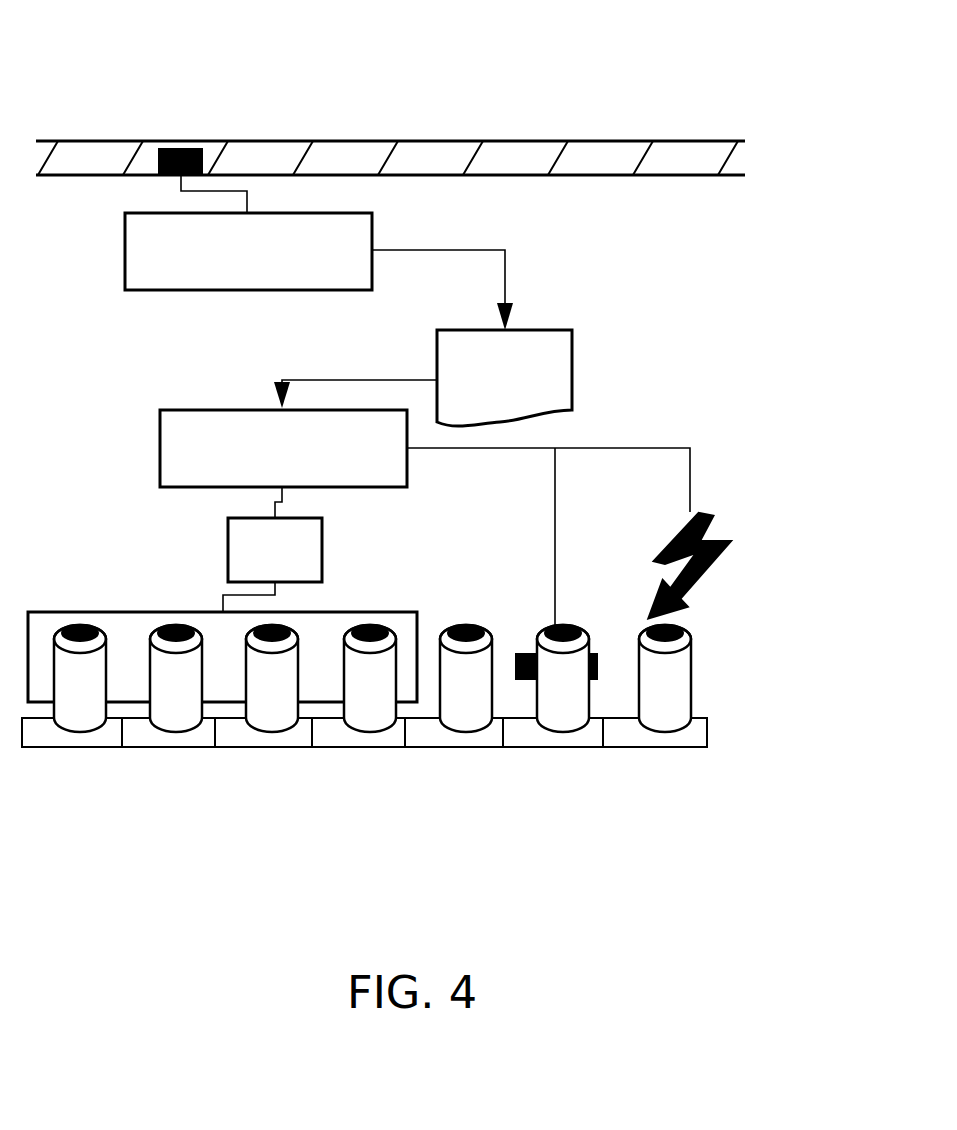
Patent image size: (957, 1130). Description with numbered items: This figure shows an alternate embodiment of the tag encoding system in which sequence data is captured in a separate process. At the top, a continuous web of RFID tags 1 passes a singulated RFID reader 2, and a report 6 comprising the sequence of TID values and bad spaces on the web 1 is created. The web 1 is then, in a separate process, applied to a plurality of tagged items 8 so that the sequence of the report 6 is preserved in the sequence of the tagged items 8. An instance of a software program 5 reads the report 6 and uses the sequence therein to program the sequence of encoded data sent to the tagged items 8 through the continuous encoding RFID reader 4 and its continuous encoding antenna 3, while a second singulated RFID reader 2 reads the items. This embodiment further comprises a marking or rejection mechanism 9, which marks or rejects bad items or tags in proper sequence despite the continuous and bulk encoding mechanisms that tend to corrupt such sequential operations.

The continuous web of RFID tags 1 is at (452, 157).
The singulated RFID reader 2 is at (175, 145).
The continuous encoding antenna 3 is at (42, 673).
The continuous encoding RFID reader 4 is at (257, 565).
The software program 5 is at (332, 445).
The report of RFID TID or UID sequence and bad tags 6 is at (557, 382).
The plurality of tagged items 8 is at (462, 698).
The marking or rejection mechanism 9 is at (702, 575).